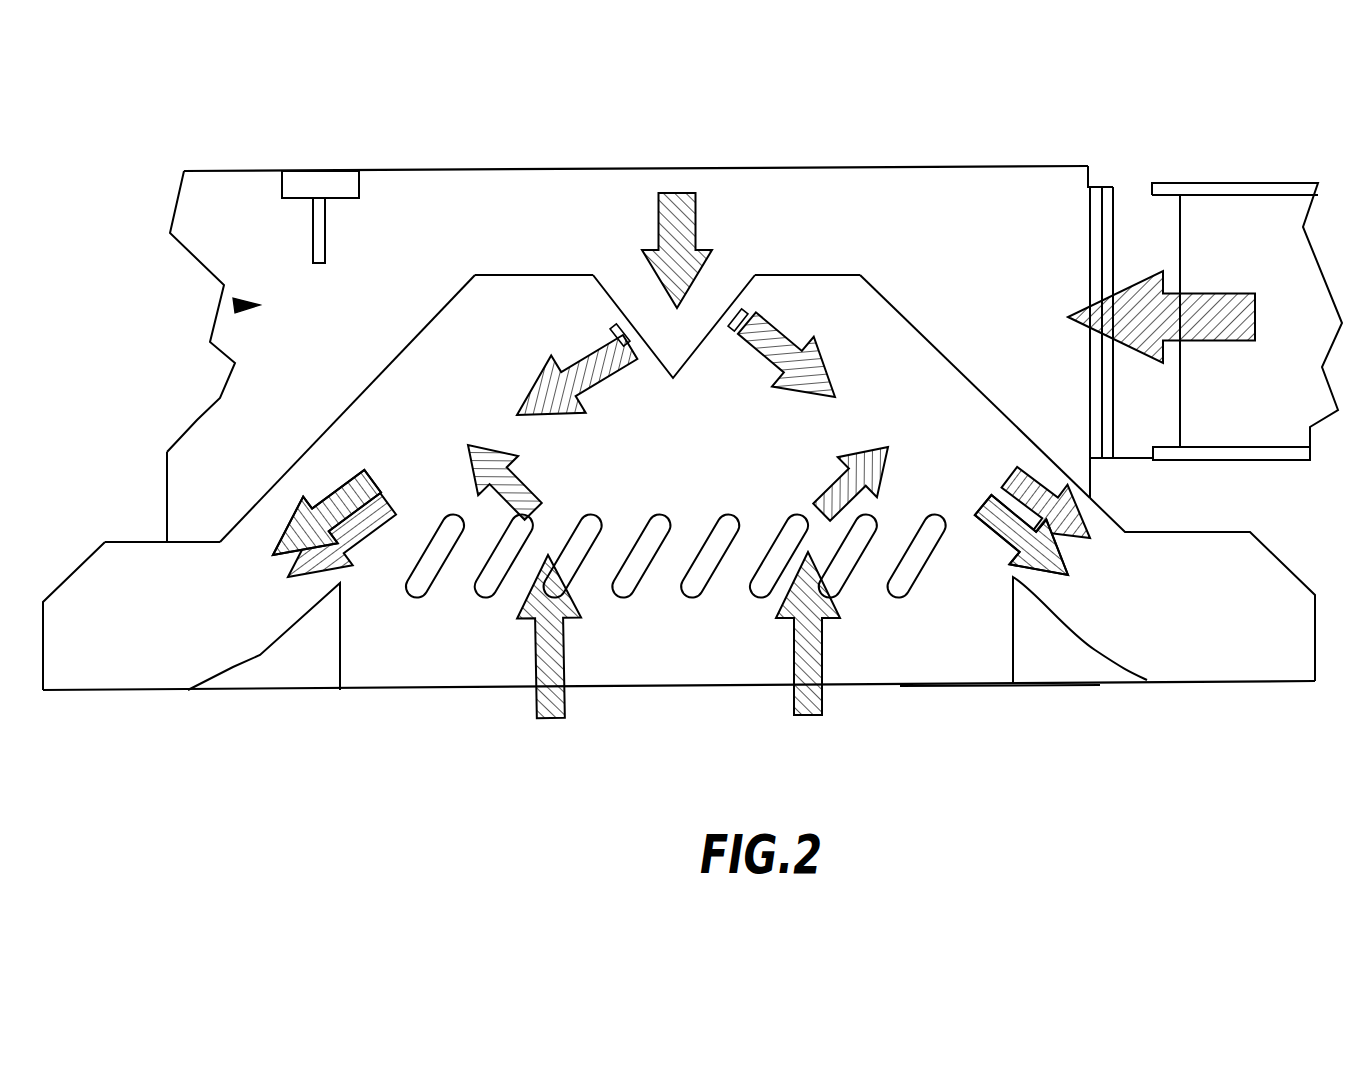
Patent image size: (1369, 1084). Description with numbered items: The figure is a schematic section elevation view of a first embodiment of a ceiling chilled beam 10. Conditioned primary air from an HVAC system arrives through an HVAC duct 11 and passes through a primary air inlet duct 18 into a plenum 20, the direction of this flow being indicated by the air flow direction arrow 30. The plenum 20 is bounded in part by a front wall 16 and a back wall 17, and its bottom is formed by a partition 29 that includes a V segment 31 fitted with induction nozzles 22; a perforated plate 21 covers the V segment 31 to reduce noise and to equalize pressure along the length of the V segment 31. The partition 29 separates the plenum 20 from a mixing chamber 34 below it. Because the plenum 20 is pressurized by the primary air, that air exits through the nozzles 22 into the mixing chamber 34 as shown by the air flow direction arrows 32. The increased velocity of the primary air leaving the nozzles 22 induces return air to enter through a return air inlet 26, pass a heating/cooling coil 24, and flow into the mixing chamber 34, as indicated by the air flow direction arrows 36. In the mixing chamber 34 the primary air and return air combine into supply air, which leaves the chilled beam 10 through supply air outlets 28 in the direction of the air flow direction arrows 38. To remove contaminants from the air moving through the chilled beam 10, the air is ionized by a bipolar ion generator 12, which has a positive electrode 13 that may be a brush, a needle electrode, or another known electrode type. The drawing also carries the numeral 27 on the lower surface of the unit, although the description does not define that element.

The ceiling chilled beam 10 is at (235, 306).
The HVAC duct 11 is at (1228, 193).
The bipolar ion generator 12 is at (300, 190).
The positive electrode 13 is at (323, 225).
The front wall 16 is at (1095, 468).
The back wall 17 is at (200, 482).
The primary air inlet duct 18 is at (1173, 400).
The plenum 20 is at (452, 233).
The perforated plate 21 is at (613, 275).
The induction nozzles 22 is at (738, 318).
The heating/cooling coil 24 is at (640, 588).
The return air inlet 26 is at (667, 687).
The bottom surface 27 is at (940, 687).
The supply air outlets 28 is at (132, 592).
The partition 29 is at (937, 345).
The air flow direction arrow 30 is at (1198, 293).
The V segment 31 is at (697, 357).
The air flow direction arrows 32 is at (700, 220).
The mixing chamber 34 is at (771, 449).
The air flow direction arrows 36 is at (473, 480).
The air flow direction arrows 38 is at (380, 478).